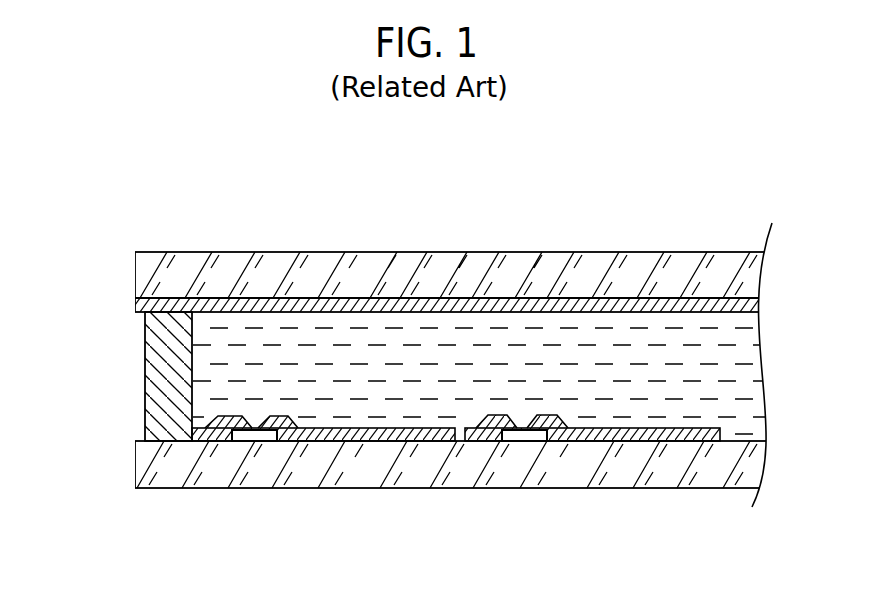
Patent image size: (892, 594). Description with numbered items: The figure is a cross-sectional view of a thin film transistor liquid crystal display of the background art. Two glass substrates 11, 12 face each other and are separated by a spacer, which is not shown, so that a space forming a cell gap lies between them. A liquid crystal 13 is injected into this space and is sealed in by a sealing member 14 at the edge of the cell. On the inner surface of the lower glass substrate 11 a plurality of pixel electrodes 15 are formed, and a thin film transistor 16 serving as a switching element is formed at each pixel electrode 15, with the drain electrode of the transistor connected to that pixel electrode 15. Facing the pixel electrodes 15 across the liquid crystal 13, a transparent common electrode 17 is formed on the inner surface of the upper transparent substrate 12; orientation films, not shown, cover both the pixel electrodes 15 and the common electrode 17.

The glass substrate 11 is at (578, 470).
The glass substrate 12 is at (202, 257).
The liquid crystal 13 is at (735, 368).
The sealing member 14 is at (155, 380).
The pixel electrode 15 is at (360, 433).
The thin film transistor 16 is at (251, 436).
The common electrode 17 is at (140, 303).